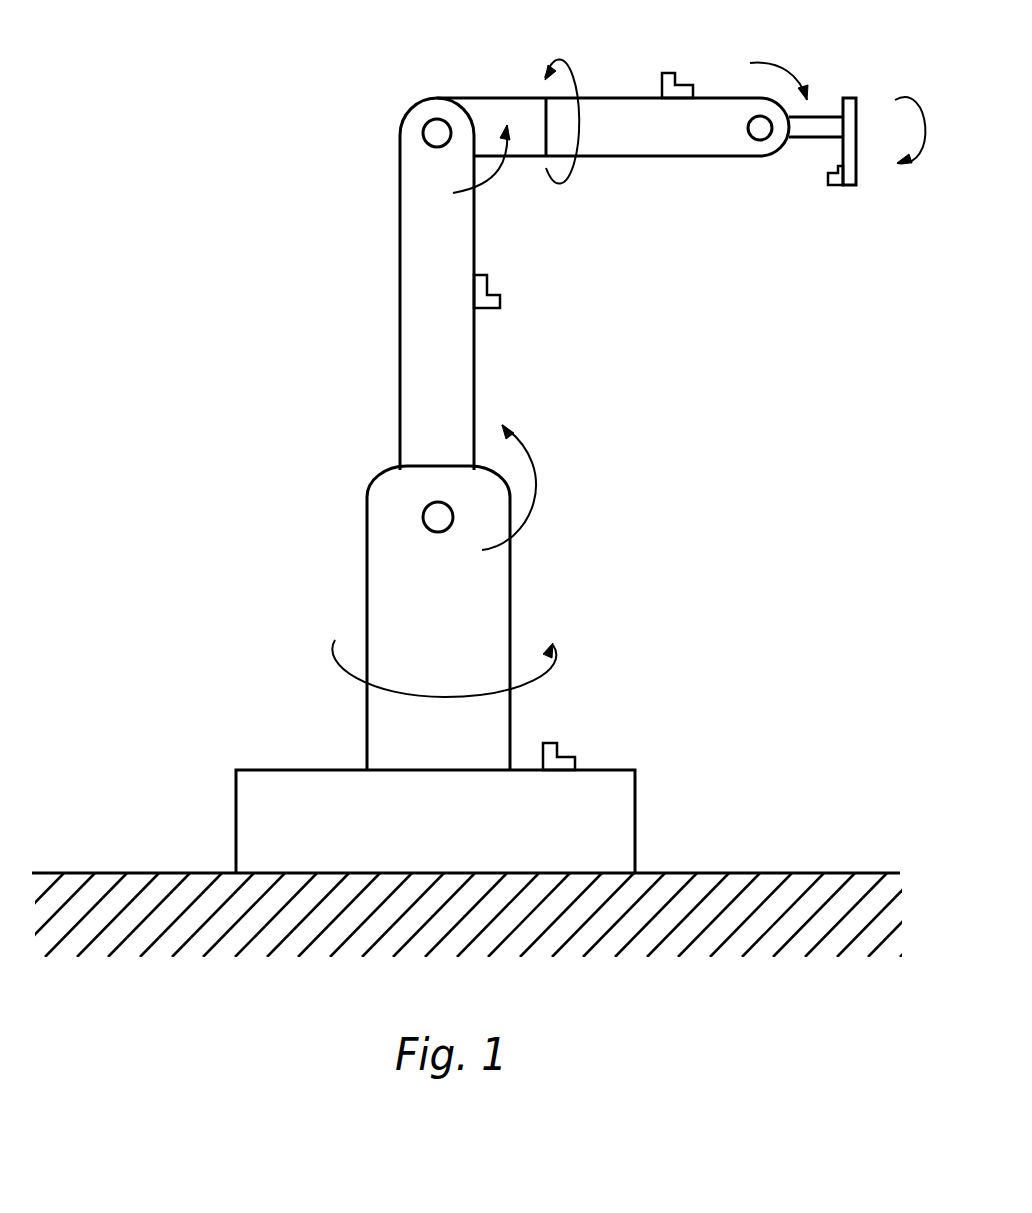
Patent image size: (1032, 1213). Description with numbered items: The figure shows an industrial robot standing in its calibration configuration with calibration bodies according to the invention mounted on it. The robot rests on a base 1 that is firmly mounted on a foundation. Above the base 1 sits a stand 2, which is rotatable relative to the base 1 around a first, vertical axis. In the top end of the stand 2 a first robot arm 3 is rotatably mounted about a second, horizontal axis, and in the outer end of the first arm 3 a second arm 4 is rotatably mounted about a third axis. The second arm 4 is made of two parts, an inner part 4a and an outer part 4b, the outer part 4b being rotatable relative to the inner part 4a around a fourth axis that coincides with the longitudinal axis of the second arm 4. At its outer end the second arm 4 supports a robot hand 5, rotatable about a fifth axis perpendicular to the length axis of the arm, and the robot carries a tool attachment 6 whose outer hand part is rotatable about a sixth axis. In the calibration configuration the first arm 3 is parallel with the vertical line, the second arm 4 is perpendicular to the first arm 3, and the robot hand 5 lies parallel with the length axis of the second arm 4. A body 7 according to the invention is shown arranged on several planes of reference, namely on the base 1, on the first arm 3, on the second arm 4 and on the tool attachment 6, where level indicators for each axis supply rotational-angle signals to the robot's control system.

The base 1 is at (250, 823).
The stand 2 is at (482, 600).
The first robot arm 3 is at (413, 280).
The second arm 4 is at (612, 113).
The inner part 4a is at (502, 110).
The outer part 4b is at (637, 147).
The robot hand 5 is at (823, 135).
The tool attachment 6 is at (845, 98).
The body 7 is at (666, 73).